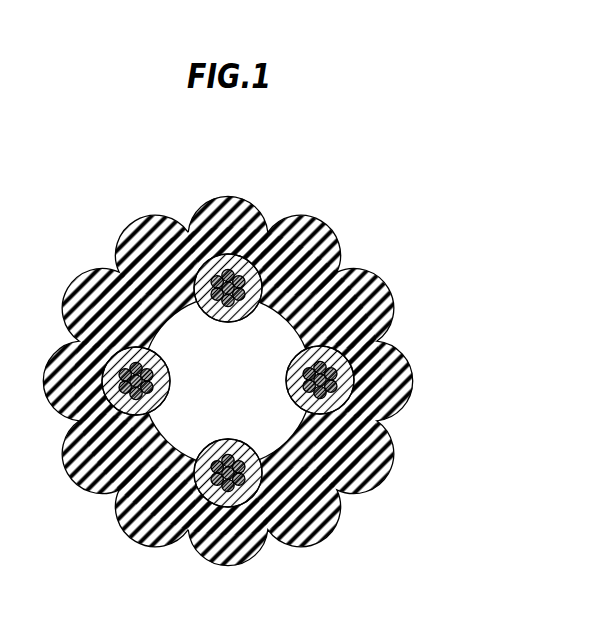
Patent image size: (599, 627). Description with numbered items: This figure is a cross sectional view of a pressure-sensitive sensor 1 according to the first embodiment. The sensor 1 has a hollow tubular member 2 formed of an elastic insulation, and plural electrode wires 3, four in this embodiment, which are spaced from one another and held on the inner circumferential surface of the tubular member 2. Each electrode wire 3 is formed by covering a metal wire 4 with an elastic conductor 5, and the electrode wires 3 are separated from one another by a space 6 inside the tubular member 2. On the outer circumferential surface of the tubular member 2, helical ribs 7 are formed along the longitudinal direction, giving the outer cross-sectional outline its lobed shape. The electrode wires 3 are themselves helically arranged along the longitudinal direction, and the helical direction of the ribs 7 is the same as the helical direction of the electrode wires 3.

The pressure-sensitive sensor 1 is at (357, 182).
The tubular member 2 is at (332, 242).
The electrode wire 3 is at (391, 389).
The metal wire 4 is at (329, 374).
The elastic conductor 5 is at (333, 402).
The space 6 is at (265, 422).
The helical ribs 7 is at (140, 533).